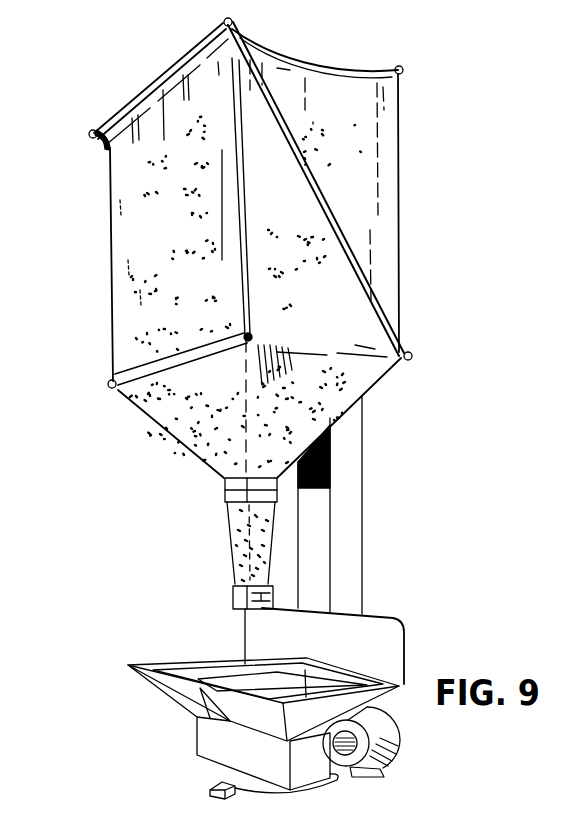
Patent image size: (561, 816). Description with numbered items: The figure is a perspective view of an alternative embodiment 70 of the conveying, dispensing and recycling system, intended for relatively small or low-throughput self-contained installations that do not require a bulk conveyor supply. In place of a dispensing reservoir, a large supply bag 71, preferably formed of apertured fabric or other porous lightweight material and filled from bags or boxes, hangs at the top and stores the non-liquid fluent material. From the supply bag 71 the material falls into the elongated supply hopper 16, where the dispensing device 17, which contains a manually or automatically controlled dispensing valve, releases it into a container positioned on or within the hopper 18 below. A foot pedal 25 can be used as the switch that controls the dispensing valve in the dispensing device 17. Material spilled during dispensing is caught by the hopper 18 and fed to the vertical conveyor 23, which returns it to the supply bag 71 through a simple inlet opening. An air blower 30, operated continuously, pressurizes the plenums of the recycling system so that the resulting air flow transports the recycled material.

The alternative embodiment of the conveying, dispensing and recycling system 70 is at (143, 83).
The supply bag 71 is at (113, 304).
The supply hopper 16 is at (232, 525).
The dispensing device 17 is at (232, 595).
The hopper 18 is at (170, 657).
The vertical conveyor 23 is at (366, 494).
The air blower 30 is at (401, 743).
The foot pedal 25 is at (208, 790).